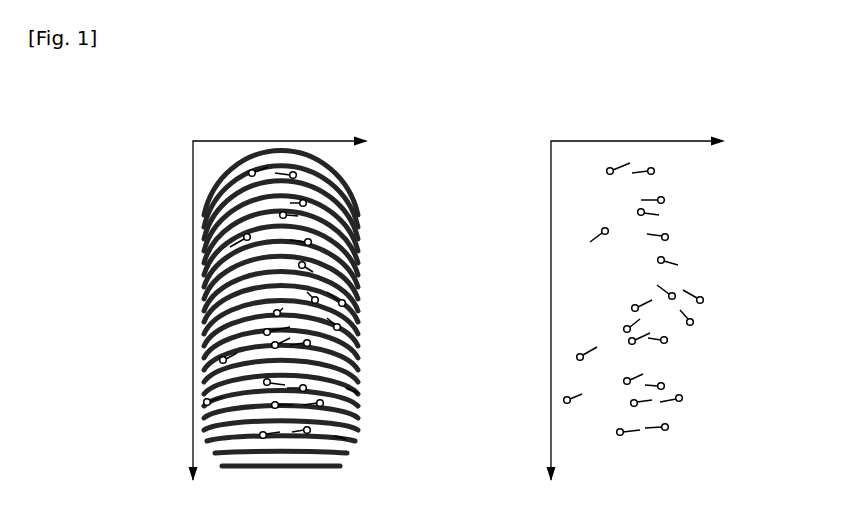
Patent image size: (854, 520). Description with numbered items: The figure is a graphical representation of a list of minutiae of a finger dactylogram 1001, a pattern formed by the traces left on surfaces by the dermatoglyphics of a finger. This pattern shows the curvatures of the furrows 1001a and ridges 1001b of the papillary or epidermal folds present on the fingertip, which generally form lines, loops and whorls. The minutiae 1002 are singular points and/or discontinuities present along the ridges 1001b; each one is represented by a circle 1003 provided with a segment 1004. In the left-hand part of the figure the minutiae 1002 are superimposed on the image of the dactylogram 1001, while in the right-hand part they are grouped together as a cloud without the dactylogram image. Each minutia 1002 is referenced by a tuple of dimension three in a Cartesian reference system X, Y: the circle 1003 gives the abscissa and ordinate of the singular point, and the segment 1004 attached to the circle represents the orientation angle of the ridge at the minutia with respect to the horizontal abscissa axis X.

The finger dactylogram 1001 is at (135, 143).
The furrows 1001a is at (357, 392).
The ridges 1001b is at (345, 438).
The minutiae 1002 is at (520, 133).
The circle 1003 is at (702, 303).
The segment 1004 is at (687, 291).